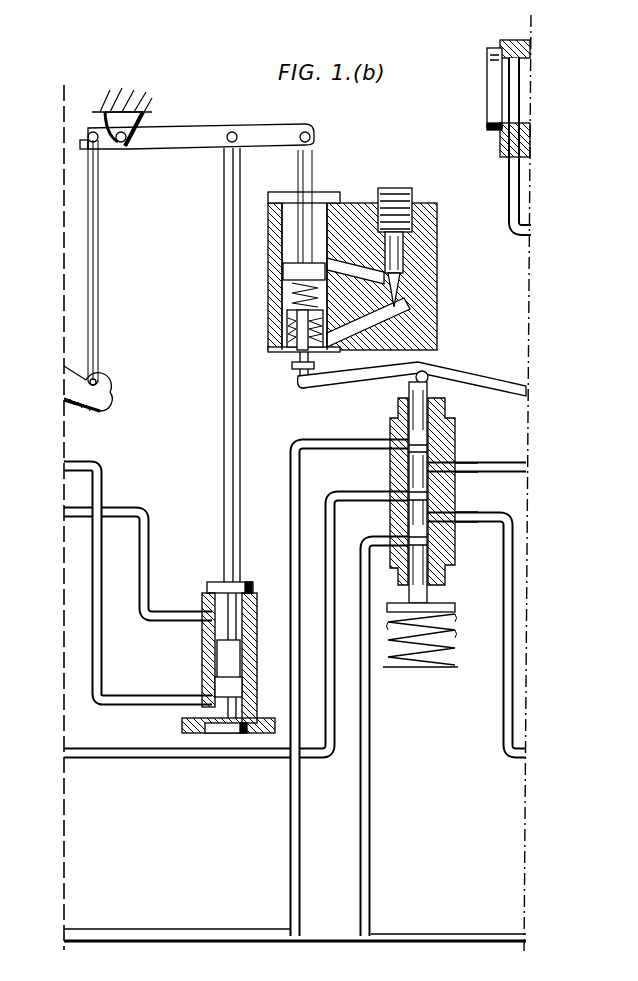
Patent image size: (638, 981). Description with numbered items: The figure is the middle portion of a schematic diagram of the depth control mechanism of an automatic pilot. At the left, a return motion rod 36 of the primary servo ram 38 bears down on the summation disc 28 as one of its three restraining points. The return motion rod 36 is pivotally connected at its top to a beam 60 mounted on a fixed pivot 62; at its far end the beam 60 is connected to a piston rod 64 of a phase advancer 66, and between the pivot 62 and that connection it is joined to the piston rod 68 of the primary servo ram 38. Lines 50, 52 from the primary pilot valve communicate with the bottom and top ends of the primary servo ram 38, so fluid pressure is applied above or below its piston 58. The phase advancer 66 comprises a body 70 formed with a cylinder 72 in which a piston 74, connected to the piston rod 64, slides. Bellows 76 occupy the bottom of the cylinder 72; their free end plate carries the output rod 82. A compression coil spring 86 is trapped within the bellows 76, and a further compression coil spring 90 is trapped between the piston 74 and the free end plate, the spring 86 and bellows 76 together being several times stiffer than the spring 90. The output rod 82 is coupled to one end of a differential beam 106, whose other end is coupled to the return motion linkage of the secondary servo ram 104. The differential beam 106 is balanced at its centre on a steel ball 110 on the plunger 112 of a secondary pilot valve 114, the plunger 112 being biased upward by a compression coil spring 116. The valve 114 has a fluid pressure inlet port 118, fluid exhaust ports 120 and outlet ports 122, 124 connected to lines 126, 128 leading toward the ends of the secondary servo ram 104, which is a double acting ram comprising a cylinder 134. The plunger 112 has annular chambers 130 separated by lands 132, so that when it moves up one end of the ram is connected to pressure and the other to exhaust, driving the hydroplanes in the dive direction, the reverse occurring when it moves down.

The summation disc 28 is at (110, 393).
The return motion rod 36 is at (99, 267).
The primary servo ram 38 is at (218, 689).
The line 50 is at (100, 673).
The line 52 is at (148, 550).
The piston 58 is at (218, 652).
The beam 60 is at (195, 151).
The fixed pivot 62 is at (142, 120).
The piston rod 64 is at (314, 158).
The phase advancer 66 is at (449, 205).
The piston rod 68 is at (225, 282).
The body 70 is at (426, 262).
The cylinder 72 is at (290, 215).
The piston 74 is at (288, 270).
The bellows 76 is at (286, 326).
The output rod 82 is at (298, 372).
The compression coil spring 86 is at (286, 346).
The compression coil spring 90 is at (286, 286).
The secondary servo ram 104 is at (524, 36).
The differential beam 106 is at (486, 372).
The steel ball 110 is at (413, 380).
The plunger 112 is at (428, 405).
The secondary pilot valve 114 is at (446, 577).
The compression coil spring 116 is at (414, 652).
The fluid pressure inlet port 118 is at (345, 492).
The fluid exhaust ports 120 is at (388, 438).
The fluid outlet port 122 is at (462, 474).
The fluid outlet port 124 is at (460, 518).
The line 126 is at (517, 457).
The line 128 is at (503, 720).
The annular chambers 130 is at (432, 447).
The lands 132 is at (418, 513).
The cylinder 134 is at (517, 90).